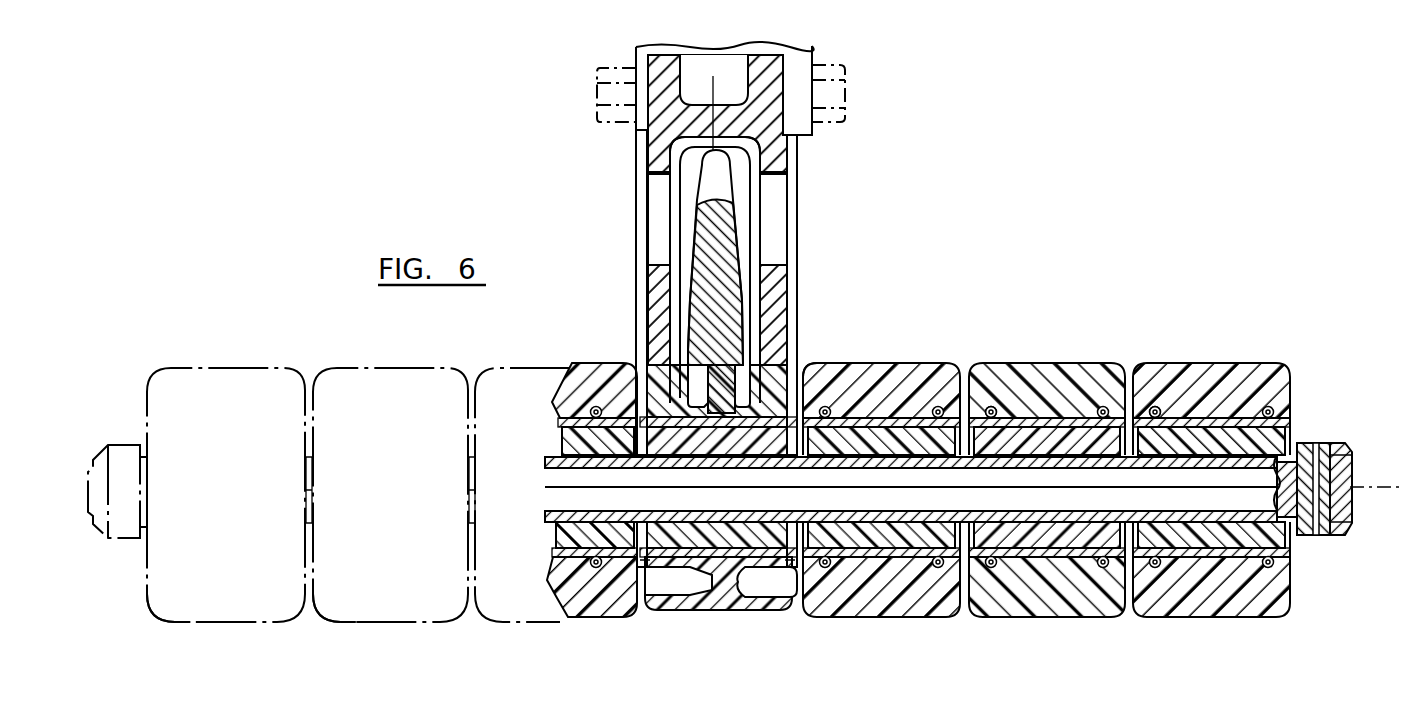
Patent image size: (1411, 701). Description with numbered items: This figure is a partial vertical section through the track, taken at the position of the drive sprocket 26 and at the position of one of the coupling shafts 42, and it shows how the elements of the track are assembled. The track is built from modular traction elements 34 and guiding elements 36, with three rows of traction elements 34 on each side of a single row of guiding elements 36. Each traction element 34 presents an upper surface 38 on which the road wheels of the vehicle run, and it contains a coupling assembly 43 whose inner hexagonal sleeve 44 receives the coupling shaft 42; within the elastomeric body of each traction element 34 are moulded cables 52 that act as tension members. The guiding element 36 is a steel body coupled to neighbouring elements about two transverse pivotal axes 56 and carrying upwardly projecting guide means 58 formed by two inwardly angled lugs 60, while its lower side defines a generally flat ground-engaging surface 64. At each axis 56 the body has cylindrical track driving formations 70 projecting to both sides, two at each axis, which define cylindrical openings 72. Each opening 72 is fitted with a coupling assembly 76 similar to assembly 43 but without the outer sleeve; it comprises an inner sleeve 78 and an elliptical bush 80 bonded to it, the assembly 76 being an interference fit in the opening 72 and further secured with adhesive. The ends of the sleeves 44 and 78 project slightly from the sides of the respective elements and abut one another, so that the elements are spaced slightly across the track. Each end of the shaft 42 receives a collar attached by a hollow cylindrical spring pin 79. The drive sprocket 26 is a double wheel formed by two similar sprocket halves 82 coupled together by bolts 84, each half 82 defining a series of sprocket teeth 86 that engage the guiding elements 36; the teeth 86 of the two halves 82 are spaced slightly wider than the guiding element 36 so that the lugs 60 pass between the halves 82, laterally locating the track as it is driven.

The drive sprocket 26 is at (810, 183).
The traction element 34 is at (1140, 617).
The guiding element 36 is at (747, 226).
The upper surface 38 is at (470, 698).
The coupling shaft 42 is at (1255, 478).
The coupling assembly 43 is at (393, 647).
The inner hexagonal sleeve 44 is at (882, 520).
The cable 52 is at (998, 410).
The pivotal axis 56 is at (1396, 487).
The guide means 58 is at (752, 280).
The lug 60 is at (695, 213).
The ground-engaging surface 64 is at (688, 612).
The track driving formation 70 is at (762, 432).
The cylindrical opening 72 is at (838, 372).
The coupling assembly 76 is at (645, 557).
The inner sleeve 78 is at (745, 525).
The hollow cylindrical spring pin 79 is at (1318, 455).
The elliptical bush 80 is at (718, 535).
The sprocket half 82 is at (652, 305).
The bolt 84 is at (845, 100).
The sprocket tooth 86 is at (656, 562).